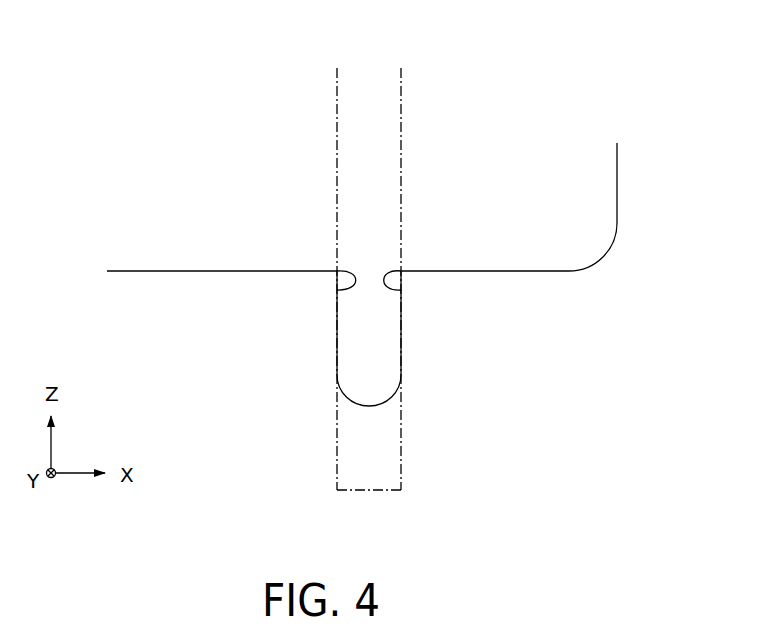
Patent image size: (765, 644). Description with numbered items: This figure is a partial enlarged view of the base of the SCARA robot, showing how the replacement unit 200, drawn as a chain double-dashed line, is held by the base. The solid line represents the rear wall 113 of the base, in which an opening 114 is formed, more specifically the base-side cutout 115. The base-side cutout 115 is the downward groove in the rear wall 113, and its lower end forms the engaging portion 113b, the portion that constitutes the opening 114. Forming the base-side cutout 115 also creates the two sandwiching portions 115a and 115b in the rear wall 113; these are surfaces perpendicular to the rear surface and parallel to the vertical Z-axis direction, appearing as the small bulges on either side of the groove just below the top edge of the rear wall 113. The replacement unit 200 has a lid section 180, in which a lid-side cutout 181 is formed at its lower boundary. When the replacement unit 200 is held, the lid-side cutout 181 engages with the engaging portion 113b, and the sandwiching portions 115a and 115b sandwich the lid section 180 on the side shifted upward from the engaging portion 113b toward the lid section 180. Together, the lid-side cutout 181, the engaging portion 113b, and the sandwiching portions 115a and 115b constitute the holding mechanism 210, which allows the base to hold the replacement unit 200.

The rear wall 113 is at (362, 215).
The engaging portion 113b is at (383, 444).
The opening 114 is at (226, 271).
The base-side cutout 115 is at (394, 328).
The sandwiching portion 115a is at (350, 272).
The sandwiching portion 115b is at (394, 272).
The lid section 180 is at (373, 279).
The lid-side cutout 181 is at (336, 441).
The replacement unit 200 is at (478, 279).
The holding mechanism 210 is at (304, 357).